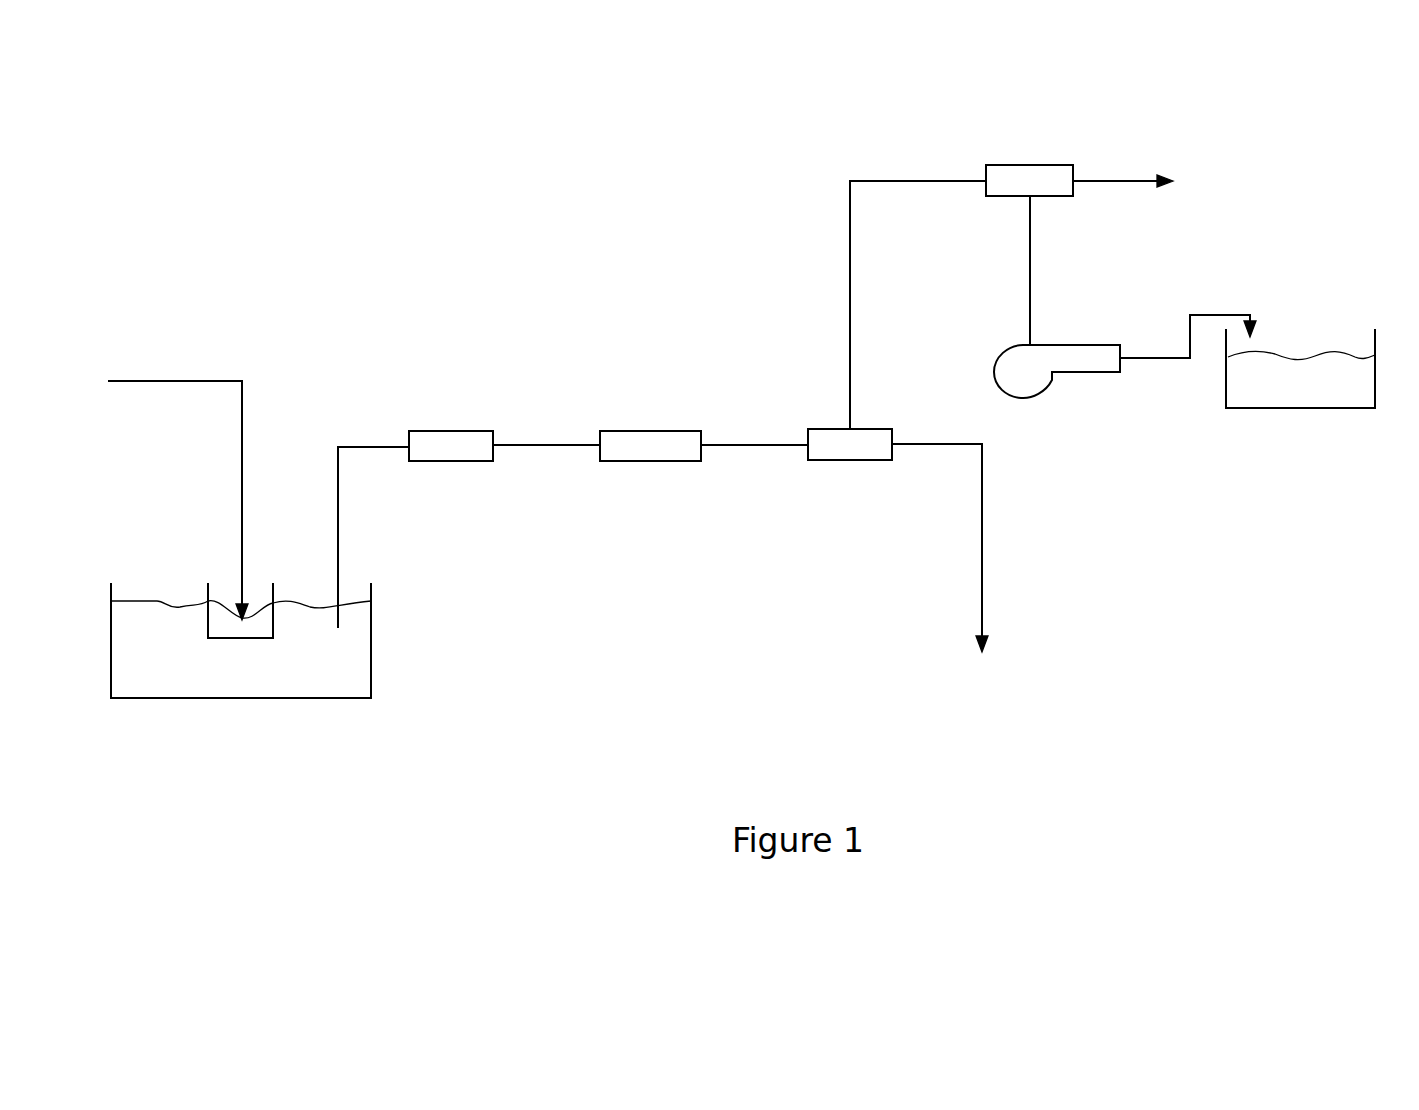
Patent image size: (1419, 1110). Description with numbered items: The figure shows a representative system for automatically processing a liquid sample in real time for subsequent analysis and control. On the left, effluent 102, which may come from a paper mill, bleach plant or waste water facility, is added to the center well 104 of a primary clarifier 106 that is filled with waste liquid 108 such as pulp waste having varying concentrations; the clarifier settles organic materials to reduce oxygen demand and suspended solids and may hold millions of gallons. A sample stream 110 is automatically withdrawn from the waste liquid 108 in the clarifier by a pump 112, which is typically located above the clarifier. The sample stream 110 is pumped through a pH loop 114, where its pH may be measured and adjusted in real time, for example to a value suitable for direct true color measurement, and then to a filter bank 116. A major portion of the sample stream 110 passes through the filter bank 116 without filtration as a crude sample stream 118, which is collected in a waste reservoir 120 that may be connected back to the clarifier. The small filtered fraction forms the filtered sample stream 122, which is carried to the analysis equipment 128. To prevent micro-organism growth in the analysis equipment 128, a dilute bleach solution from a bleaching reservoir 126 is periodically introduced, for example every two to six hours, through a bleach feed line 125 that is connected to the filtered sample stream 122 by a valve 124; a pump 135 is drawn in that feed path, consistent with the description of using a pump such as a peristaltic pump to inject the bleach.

The effluent 102 is at (168, 381).
The center well 104 is at (208, 593).
The primary clarifier 106 is at (177, 700).
The waste liquid 108 is at (323, 665).
The sample stream 110 is at (360, 447).
The pump 112 is at (455, 431).
The pH loop 114 is at (650, 431).
The filter bank 116 is at (838, 429).
The crude sample stream 118 is at (982, 545).
The waste reservoir 120 is at (982, 695).
The filtered sample stream 122 is at (896, 181).
The valve 124 is at (1030, 165).
The bleach feed line 125 is at (1030, 270).
The bleaching reservoir 126 is at (1305, 410).
The analysis equipment 128 is at (1170, 178).
The pump 135 is at (1027, 387).